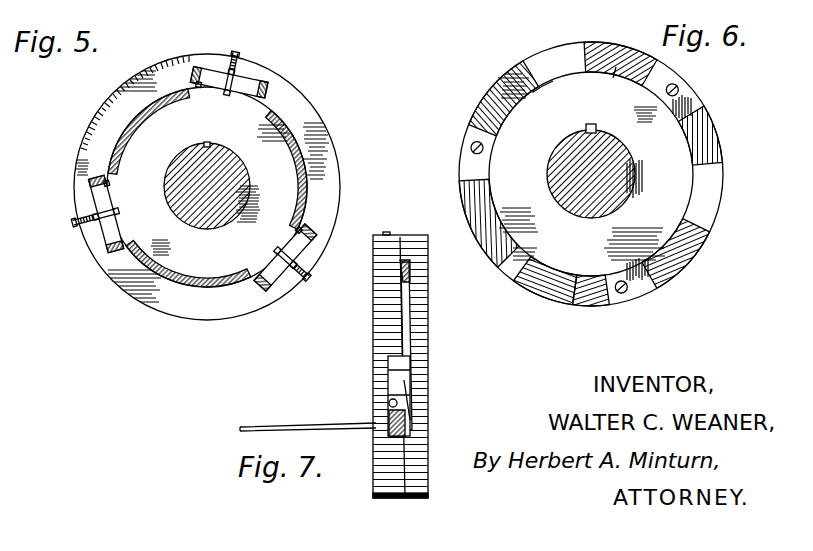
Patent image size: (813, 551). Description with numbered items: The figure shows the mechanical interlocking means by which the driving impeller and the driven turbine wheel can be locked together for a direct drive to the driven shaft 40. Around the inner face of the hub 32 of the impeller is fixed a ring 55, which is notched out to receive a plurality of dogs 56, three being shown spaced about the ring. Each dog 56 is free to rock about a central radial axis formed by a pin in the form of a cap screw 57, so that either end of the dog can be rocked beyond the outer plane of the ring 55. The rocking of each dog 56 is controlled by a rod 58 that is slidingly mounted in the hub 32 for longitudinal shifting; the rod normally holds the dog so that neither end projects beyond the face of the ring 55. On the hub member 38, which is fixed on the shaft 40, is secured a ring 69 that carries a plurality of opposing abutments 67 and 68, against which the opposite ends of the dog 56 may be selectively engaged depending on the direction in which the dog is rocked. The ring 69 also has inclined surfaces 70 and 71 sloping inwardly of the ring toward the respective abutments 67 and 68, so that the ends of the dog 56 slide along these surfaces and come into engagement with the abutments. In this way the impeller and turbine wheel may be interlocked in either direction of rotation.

In FIG. 5, the hub 32 is at (120, 148).
In FIG. 6, the hub member 38 is at (688, 157).
In FIG. 5, the shaft 40 is at (200, 222).
In FIG. 6, the shaft 40 is at (557, 165).
In FIG. 5, the ring 55 is at (330, 162).
In FIG. 7, the ring 55 is at (380, 317).
In FIG. 5, the dog 56 is at (258, 84).
In FIG. 7, the dog 56 is at (397, 375).
In FIG. 5, the cap screw 57 is at (237, 50).
In FIG. 7, the cap screw 57 is at (388, 402).
In FIG. 5, the rod 58 is at (204, 86).
In FIG. 7, the rod 58 is at (310, 420).
In FIG. 6, the abutment 67 is at (633, 43).
In FIG. 7, the abutment 67 is at (411, 263).
In FIG. 6, the abutment 68 is at (494, 92).
In FIG. 7, the abutment 68 is at (410, 447).
In FIG. 6, the ring 69 is at (568, 46).
In FIG. 7, the ring 69 is at (420, 338).
In FIG. 6, the inclined surface 70 is at (560, 86).
In FIG. 7, the inclined surface 70 is at (408, 297).
In FIG. 6, the inclined surface 71 is at (617, 72).
In FIG. 7, the inclined surface 71 is at (410, 393).